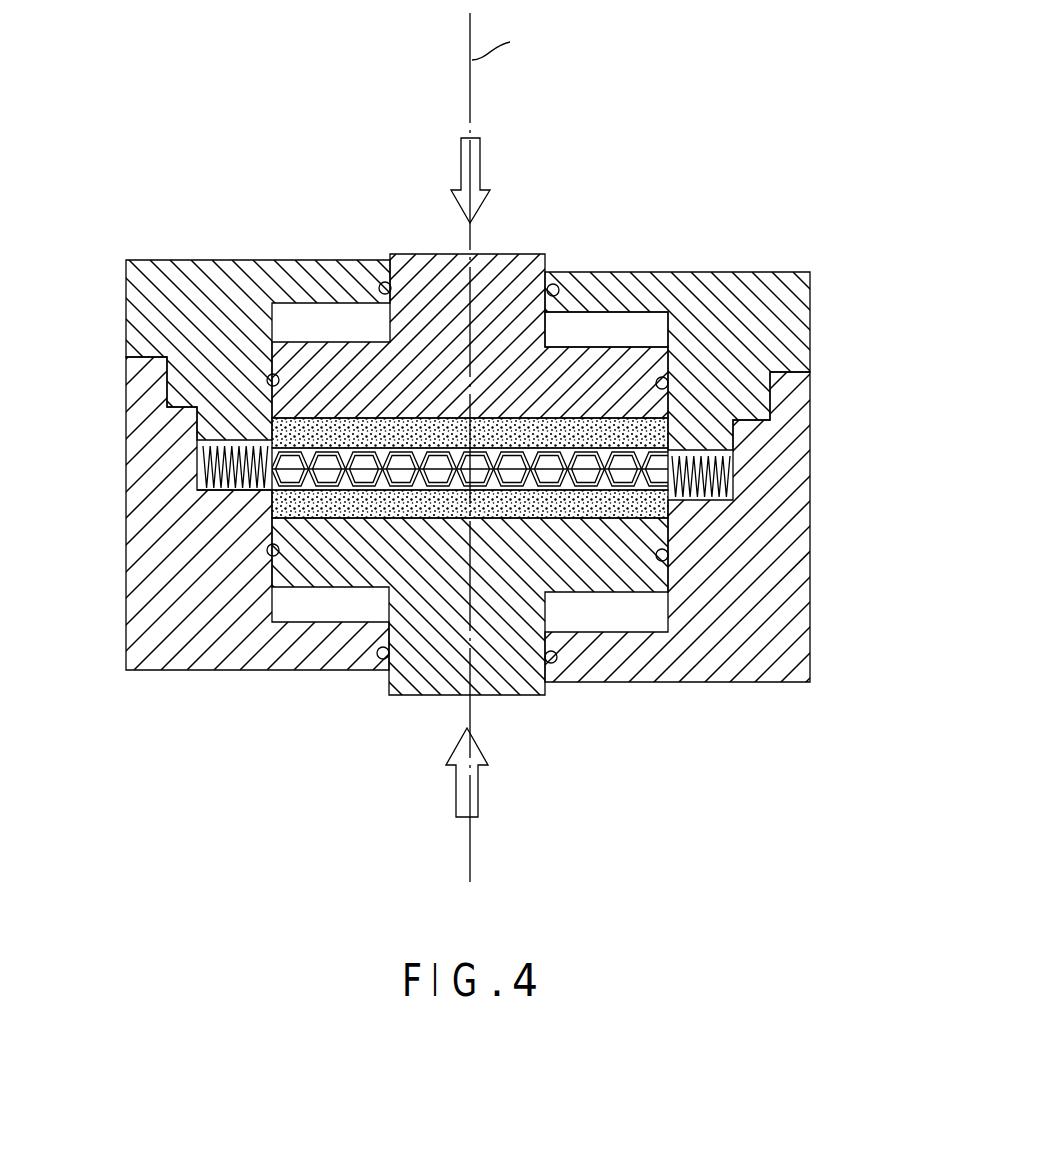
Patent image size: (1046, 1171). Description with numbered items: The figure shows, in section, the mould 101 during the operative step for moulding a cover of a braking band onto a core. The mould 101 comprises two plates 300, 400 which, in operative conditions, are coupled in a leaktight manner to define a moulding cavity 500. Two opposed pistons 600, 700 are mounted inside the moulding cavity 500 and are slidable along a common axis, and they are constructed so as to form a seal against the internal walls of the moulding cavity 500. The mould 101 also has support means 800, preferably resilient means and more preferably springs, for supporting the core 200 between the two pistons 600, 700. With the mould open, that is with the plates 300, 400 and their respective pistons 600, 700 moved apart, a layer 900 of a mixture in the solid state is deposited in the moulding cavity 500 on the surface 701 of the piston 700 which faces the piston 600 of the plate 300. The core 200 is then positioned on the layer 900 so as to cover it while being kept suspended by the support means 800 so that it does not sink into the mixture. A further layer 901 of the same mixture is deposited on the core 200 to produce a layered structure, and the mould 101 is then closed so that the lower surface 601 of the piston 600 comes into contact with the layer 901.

The mould 101 is at (746, 162).
The core 200 is at (256, 409).
The plate 300 is at (772, 273).
The plate 400 is at (740, 684).
The moulding cavity 500 is at (583, 328).
The piston 600 is at (388, 320).
The lower surface 601 is at (243, 383).
The piston 700 is at (378, 607).
The surface 701 is at (237, 497).
The support means 800 is at (212, 474).
The layer 900 is at (675, 558).
The further layer 901 is at (672, 380).